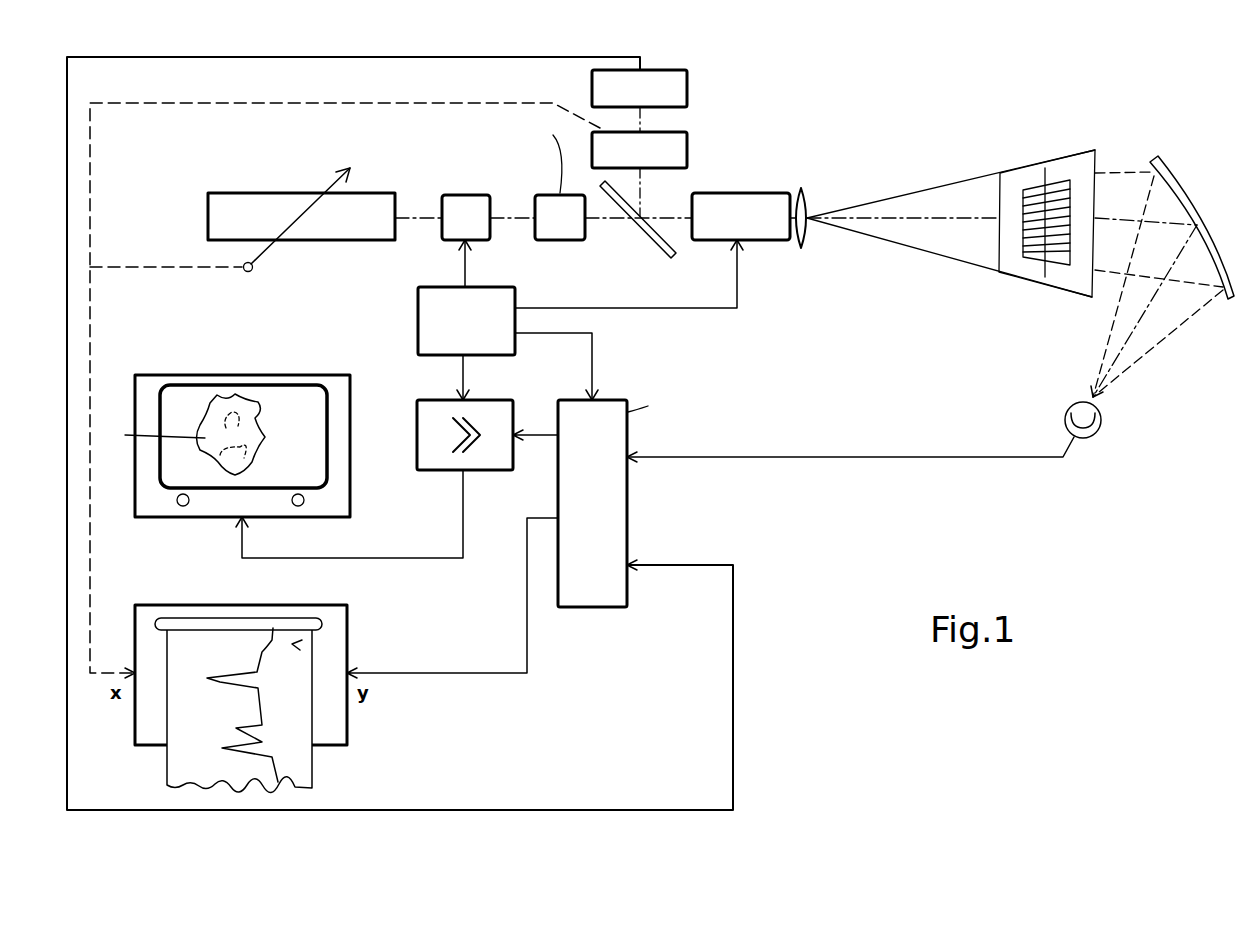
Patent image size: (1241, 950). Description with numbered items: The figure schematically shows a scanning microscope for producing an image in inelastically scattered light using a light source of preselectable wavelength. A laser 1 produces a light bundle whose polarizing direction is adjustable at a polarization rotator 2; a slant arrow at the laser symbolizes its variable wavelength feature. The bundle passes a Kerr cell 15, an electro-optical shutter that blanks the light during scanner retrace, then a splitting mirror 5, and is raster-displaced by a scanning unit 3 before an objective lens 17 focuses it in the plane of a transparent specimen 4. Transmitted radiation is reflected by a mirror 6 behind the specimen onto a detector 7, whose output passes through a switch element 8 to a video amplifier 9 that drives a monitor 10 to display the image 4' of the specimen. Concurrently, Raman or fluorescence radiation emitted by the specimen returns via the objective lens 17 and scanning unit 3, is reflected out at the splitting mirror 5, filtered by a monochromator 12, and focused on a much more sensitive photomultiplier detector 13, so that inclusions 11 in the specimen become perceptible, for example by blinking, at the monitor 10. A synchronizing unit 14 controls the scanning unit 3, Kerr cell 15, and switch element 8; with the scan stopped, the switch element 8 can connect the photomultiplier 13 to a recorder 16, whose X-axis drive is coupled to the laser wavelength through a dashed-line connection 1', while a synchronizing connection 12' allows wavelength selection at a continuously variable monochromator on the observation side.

The laser 1 is at (301, 236).
The dashed-line connection 1' is at (220, 232).
The polarization rotator 2 is at (545, 205).
The scanning unit 3 is at (750, 195).
The transparent specimen 4 is at (1047, 240).
The image of the specimen 4' is at (152, 438).
The splitting mirror 5 is at (648, 238).
The mirror 6 is at (1228, 300).
The detector 7 is at (1098, 413).
The switch element 8 is at (612, 477).
The video amplifier 9 is at (497, 410).
The monitor 10 is at (205, 477).
The inclusions 11 is at (232, 415).
The monochromator 12 is at (662, 143).
The synchronizing connection 12' is at (345, 374).
The detector 13 is at (676, 90).
The synchronizing unit 14 is at (505, 295).
The Kerr cell 15 is at (460, 196).
The recorder 16 is at (330, 730).
The objective lens 17 is at (805, 192).